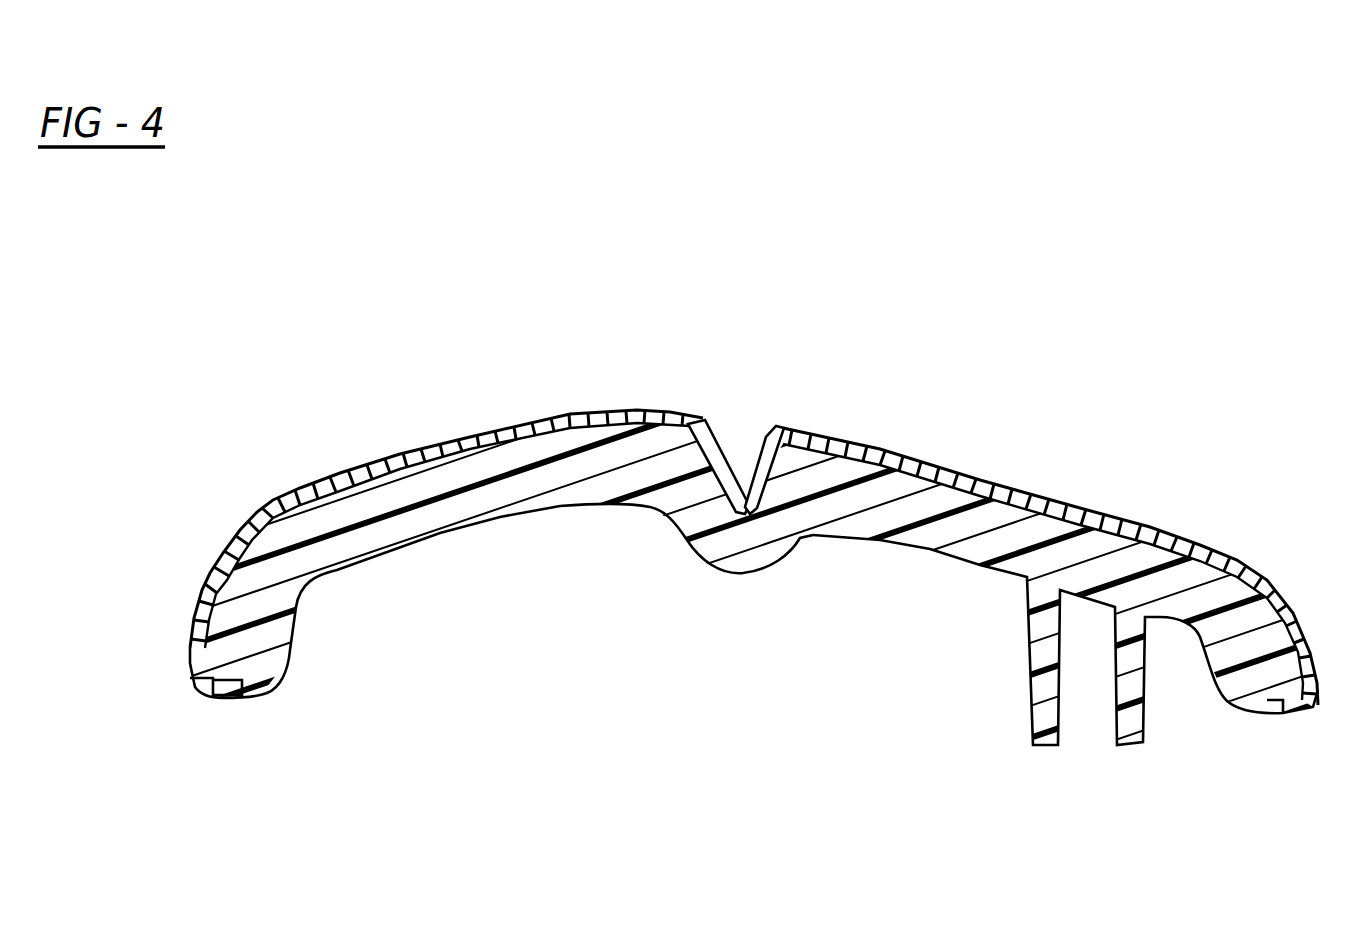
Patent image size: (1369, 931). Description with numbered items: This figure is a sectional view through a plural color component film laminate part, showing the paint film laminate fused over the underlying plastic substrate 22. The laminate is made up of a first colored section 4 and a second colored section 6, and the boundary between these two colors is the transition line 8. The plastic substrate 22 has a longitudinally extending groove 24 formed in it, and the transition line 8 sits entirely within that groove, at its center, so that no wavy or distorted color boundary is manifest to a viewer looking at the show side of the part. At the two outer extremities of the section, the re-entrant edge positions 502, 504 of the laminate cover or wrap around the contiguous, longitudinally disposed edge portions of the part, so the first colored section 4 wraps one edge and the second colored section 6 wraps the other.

The first colored section 4 is at (322, 484).
The second colored section 6 is at (1155, 530).
The transition line 8 is at (745, 455).
The plastic substrate 22 is at (282, 636).
The longitudinally extending groove 24 is at (690, 540).
The re-entrant edge position 502 is at (226, 700).
The re-entrant edge position 504 is at (1290, 714).